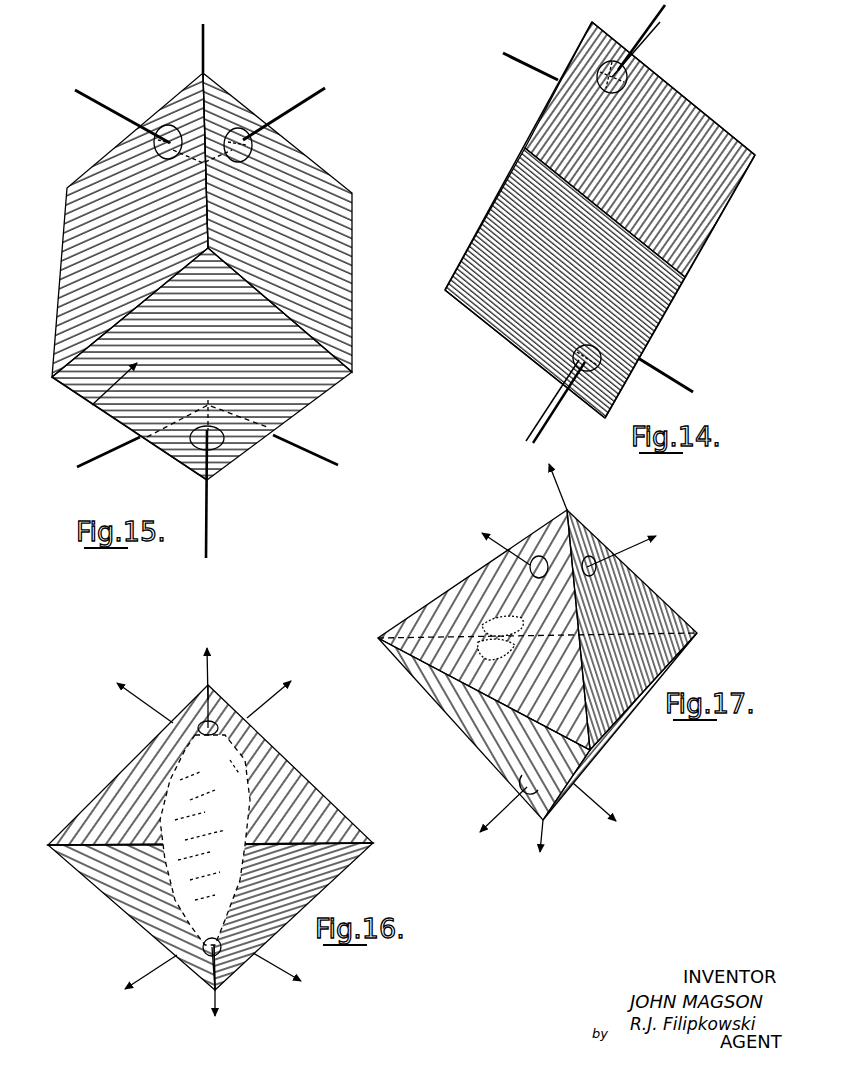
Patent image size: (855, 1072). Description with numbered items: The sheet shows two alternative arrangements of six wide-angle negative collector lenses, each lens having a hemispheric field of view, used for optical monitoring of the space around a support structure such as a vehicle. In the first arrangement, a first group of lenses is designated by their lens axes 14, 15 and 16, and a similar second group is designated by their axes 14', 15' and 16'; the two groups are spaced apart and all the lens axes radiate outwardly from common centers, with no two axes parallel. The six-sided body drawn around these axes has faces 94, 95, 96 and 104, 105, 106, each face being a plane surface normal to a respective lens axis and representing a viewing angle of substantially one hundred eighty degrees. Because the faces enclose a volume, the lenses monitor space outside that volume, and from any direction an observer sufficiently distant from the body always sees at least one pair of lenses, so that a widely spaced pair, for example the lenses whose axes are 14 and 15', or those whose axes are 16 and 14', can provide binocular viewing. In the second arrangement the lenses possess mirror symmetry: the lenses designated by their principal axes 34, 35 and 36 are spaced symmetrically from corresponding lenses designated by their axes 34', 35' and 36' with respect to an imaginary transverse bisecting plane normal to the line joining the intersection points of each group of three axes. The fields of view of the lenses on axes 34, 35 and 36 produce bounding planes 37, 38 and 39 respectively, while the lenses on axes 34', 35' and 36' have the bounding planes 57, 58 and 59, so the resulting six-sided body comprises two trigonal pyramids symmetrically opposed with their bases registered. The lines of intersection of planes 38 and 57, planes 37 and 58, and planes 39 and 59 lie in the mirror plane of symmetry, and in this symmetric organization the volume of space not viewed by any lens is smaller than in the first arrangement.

In FIG. 15, the lens axis 14 is at (282, 125).
In FIG. 14, the lens axis 14 is at (531, 247).
In FIG. 15, the lens axis 15 is at (128, 119).
In FIG. 14, the lens axis 15 is at (590, 232).
In FIG. 15, the lens axis 16 is at (208, 136).
In FIG. 14, the lens axis 16 is at (631, 46).
In FIG. 15, the lens axis 14' is at (305, 459).
In FIG. 15, the lens axis 15' is at (220, 492).
In FIG. 15, the lens axis 16' is at (110, 461).
In FIG. 14, the lens axis 16' is at (668, 372).
In FIG. 15, the face 94 is at (315, 202).
In FIG. 14, the face 94 is at (527, 134).
In FIG. 15, the face 95 is at (133, 182).
In FIG. 14, the face 95 is at (687, 96).
In FIG. 14, the face 96 is at (680, 142).
In FIG. 15, the face 104 is at (296, 398).
In FIG. 14, the face 104 is at (527, 228).
In FIG. 15, the face 105 is at (92, 403).
In FIG. 14, the face 105 is at (527, 345).
In FIG. 15, the face 106 is at (110, 427).
In FIG. 14, the face 106 is at (660, 335).
In FIG. 17, the principal axis 34 is at (619, 546).
In FIG. 16, the principal axis 34 is at (139, 703).
In FIG. 17, the principal axis 35 is at (502, 555).
In FIG. 16, the principal axis 35 is at (278, 700).
In FIG. 17, the principal axis 36 is at (543, 487).
In FIG. 16, the principal axis 36 is at (222, 691).
In FIG. 17, the principal axis 34' is at (504, 803).
In FIG. 16, the principal axis 34' is at (168, 963).
In FIG. 17, the principal axis 35' is at (596, 800).
In FIG. 16, the principal axis 35' is at (277, 975).
In FIG. 17, the principal axis 36' is at (561, 836).
In FIG. 16, the principal axis 36' is at (195, 981).
In FIG. 17, the bounding plane 37 is at (648, 611).
In FIG. 17, the bounding plane 38 is at (492, 586).
In FIG. 16, the bounding plane 39 is at (305, 792).
In FIG. 17, the bounding plane 57 is at (497, 744).
In FIG. 17, the bounding plane 58 is at (612, 736).
In FIG. 16, the bounding plane 59 is at (133, 882).